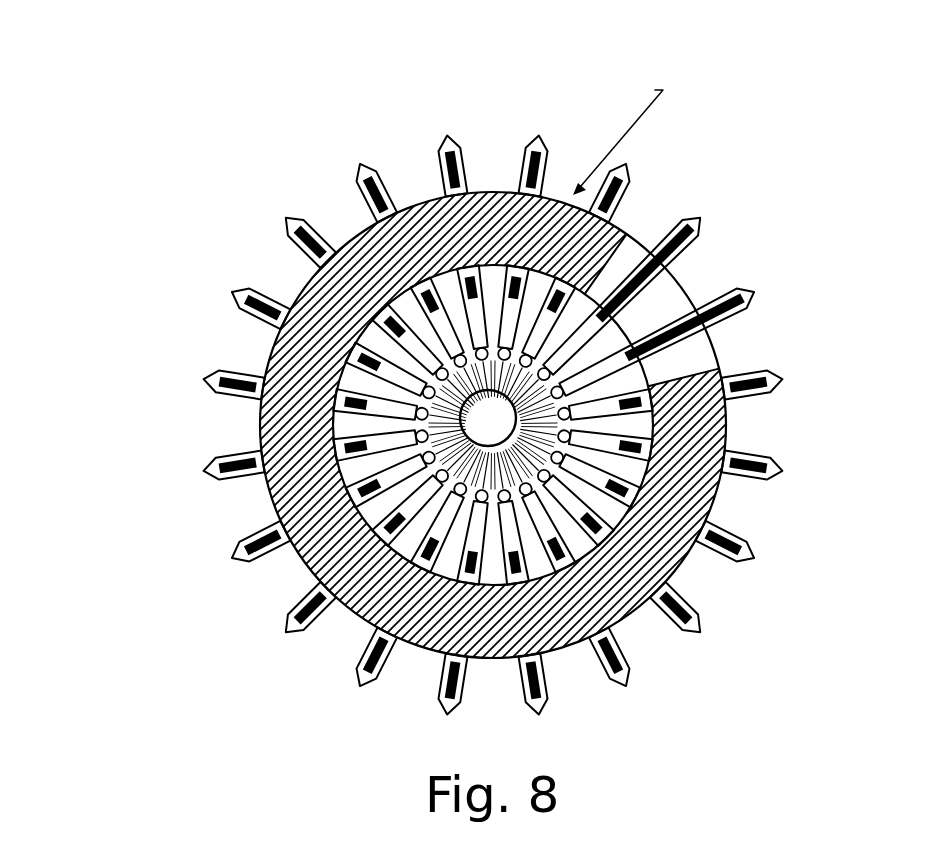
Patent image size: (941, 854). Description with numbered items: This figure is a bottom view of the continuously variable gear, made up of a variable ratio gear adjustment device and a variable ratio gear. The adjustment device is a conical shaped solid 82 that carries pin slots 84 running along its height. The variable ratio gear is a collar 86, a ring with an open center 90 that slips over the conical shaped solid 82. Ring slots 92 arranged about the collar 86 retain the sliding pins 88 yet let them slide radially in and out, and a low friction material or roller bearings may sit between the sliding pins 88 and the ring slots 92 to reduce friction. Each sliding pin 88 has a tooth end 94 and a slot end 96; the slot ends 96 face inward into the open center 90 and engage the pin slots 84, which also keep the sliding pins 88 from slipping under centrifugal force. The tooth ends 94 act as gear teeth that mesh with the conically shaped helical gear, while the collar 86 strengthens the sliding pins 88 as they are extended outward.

The conical shaped solid 82 is at (488, 418).
The pin slots 84 is at (590, 320).
The collar 86 is at (353, 610).
The sliding pins 88 is at (690, 263).
The open center 90 is at (548, 268).
The ring slots 92 is at (683, 275).
The tooth end 94 is at (707, 233).
The slot end 96 is at (487, 345).